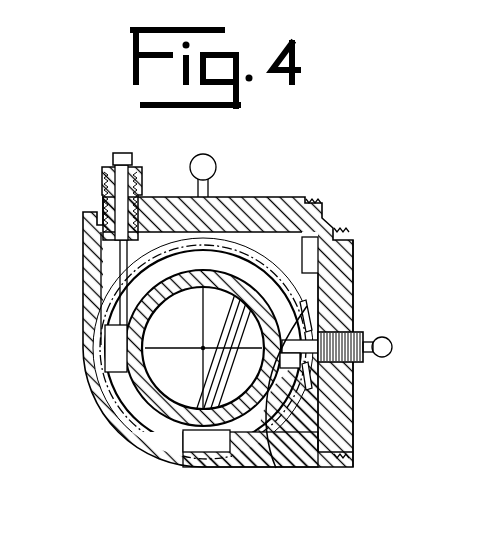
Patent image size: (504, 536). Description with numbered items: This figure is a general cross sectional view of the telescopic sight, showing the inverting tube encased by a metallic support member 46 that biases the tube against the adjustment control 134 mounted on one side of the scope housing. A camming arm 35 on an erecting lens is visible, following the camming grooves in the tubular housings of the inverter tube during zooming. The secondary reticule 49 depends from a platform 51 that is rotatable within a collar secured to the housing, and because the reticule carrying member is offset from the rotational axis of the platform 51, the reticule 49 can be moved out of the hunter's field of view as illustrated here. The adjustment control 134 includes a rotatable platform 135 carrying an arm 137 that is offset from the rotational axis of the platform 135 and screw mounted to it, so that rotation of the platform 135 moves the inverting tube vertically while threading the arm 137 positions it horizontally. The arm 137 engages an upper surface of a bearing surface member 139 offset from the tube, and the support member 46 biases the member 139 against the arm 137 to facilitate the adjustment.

The camming arm 35 is at (226, 350).
The support member 46 is at (118, 372).
The secondary reticule 49 is at (122, 300).
The platform 51 is at (263, 207).
The adjustment control 134 is at (369, 228).
The rotatable platform 135 is at (354, 282).
The arm 137 is at (349, 313).
The bearing surface member 139 is at (276, 468).